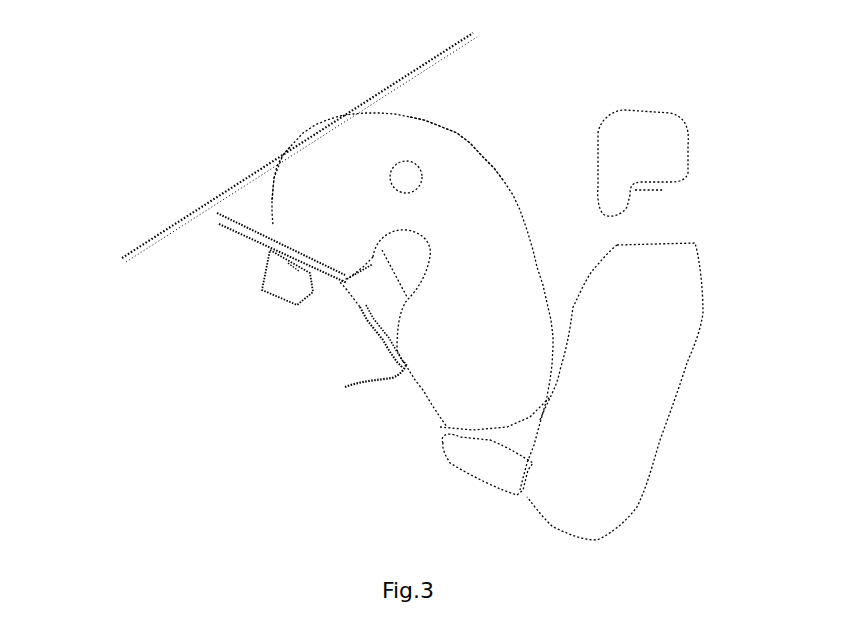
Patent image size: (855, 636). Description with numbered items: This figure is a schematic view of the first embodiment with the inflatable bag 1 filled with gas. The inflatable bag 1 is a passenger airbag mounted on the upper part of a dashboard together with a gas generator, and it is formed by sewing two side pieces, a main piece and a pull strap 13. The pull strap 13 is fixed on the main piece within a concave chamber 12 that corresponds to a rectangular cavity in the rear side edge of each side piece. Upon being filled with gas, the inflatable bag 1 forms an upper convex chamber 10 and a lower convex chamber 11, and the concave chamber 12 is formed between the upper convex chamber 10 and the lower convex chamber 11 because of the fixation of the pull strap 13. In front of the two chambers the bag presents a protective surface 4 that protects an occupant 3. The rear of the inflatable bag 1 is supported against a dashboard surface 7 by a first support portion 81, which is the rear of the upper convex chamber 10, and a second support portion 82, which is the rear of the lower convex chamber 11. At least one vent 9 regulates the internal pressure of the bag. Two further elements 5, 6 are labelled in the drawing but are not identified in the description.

The inflatable bag 1 is at (388, 109).
The occupant 3 is at (620, 364).
The protective surface 4 is at (455, 129).
The visor 5 is at (308, 123).
The shell edge 6 is at (272, 169).
The dashboard surface 7 is at (364, 397).
The vent 9 is at (420, 171).
The upper convex chamber 10 is at (274, 217).
The lower convex chamber 11 is at (468, 407).
The concave chamber 12 is at (416, 256).
The pull strap 13 is at (364, 295).
The first support portion 81 is at (271, 274).
The second support portion 82 is at (384, 334).